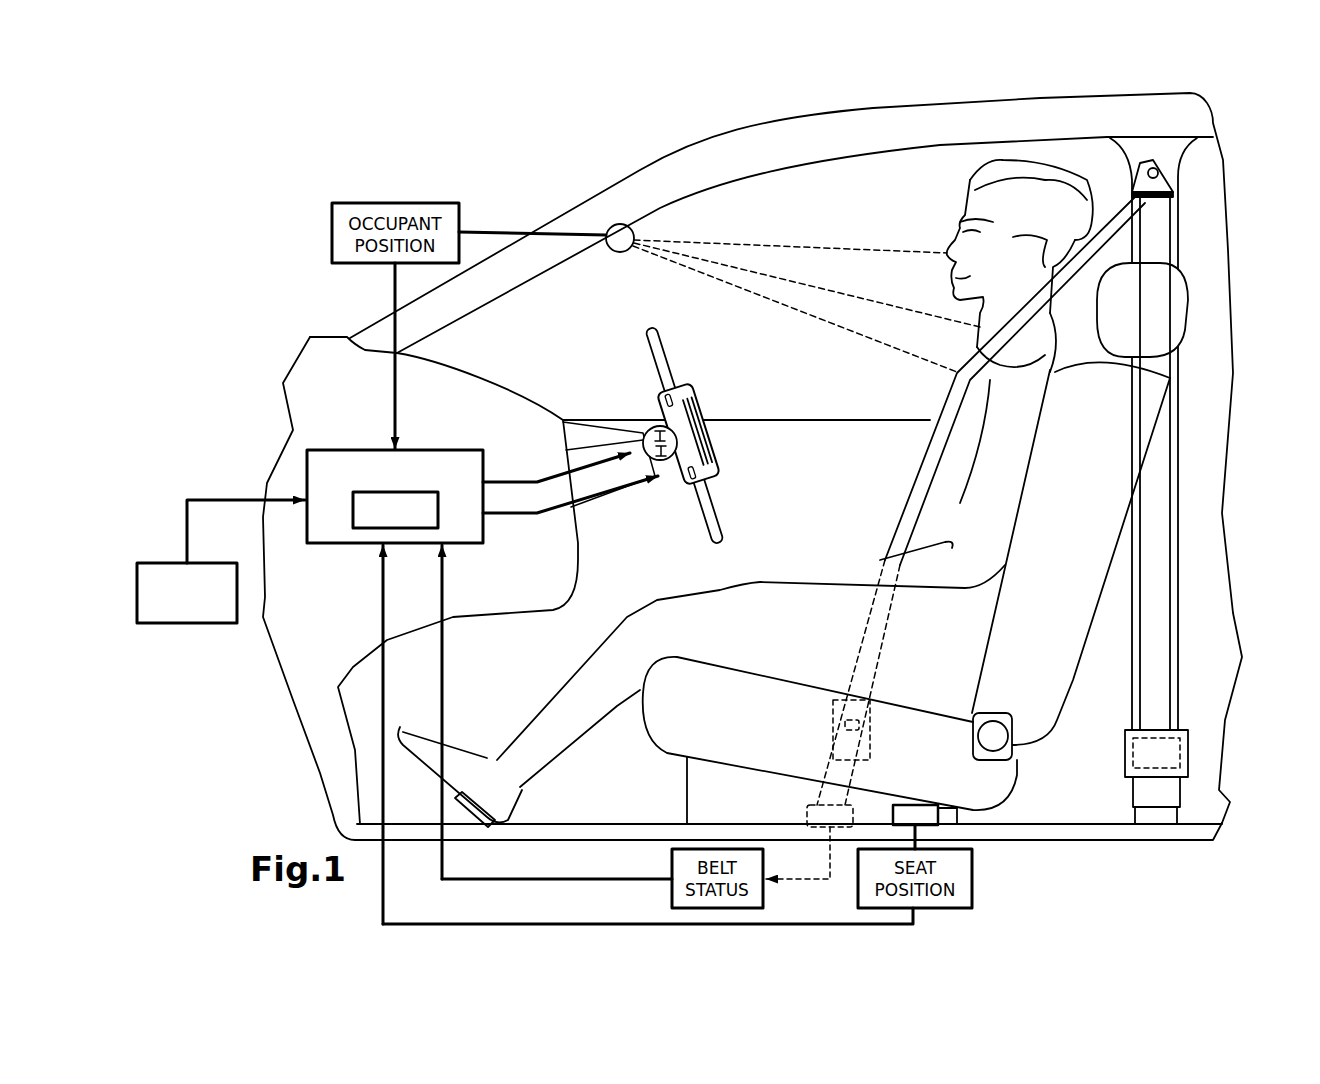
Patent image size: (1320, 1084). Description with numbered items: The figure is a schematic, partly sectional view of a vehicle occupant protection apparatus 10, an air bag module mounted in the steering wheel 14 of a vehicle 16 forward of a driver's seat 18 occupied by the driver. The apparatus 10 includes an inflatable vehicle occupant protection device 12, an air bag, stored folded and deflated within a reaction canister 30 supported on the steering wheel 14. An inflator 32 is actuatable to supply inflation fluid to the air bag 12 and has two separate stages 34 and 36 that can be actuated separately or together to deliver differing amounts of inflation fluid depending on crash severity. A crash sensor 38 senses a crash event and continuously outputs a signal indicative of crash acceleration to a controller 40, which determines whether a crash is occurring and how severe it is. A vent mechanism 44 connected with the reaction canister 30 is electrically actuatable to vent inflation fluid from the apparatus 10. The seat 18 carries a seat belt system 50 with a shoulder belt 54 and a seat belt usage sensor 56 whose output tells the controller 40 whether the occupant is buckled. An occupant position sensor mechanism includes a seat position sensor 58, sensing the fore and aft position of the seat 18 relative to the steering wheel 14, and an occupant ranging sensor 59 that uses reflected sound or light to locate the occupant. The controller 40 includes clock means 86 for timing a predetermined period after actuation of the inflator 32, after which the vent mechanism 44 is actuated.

The vehicle occupant protection apparatus 10 is at (724, 389).
The inflatable vehicle occupant protection device 12 is at (709, 433).
The steering wheel 14 is at (652, 352).
The vehicle 16 is at (561, 178).
The driver's seat 18 is at (1113, 462).
The reaction canister 30 is at (667, 392).
The inflator 32 is at (631, 432).
The first inflation fluid source 34 is at (652, 428).
The second inflation fluid source 36 is at (650, 461).
The crash sensor 38 is at (212, 623).
The controller 40 is at (368, 448).
The vent mechanism 44 is at (674, 478).
The seat belt system 50 is at (1180, 607).
The shoulder belt 54 is at (1107, 233).
The seat belt usage sensor 56 is at (806, 815).
The seat position sensor 58 is at (908, 805).
The occupant ranging sensor 59 is at (637, 228).
The clock means 86 is at (372, 528).